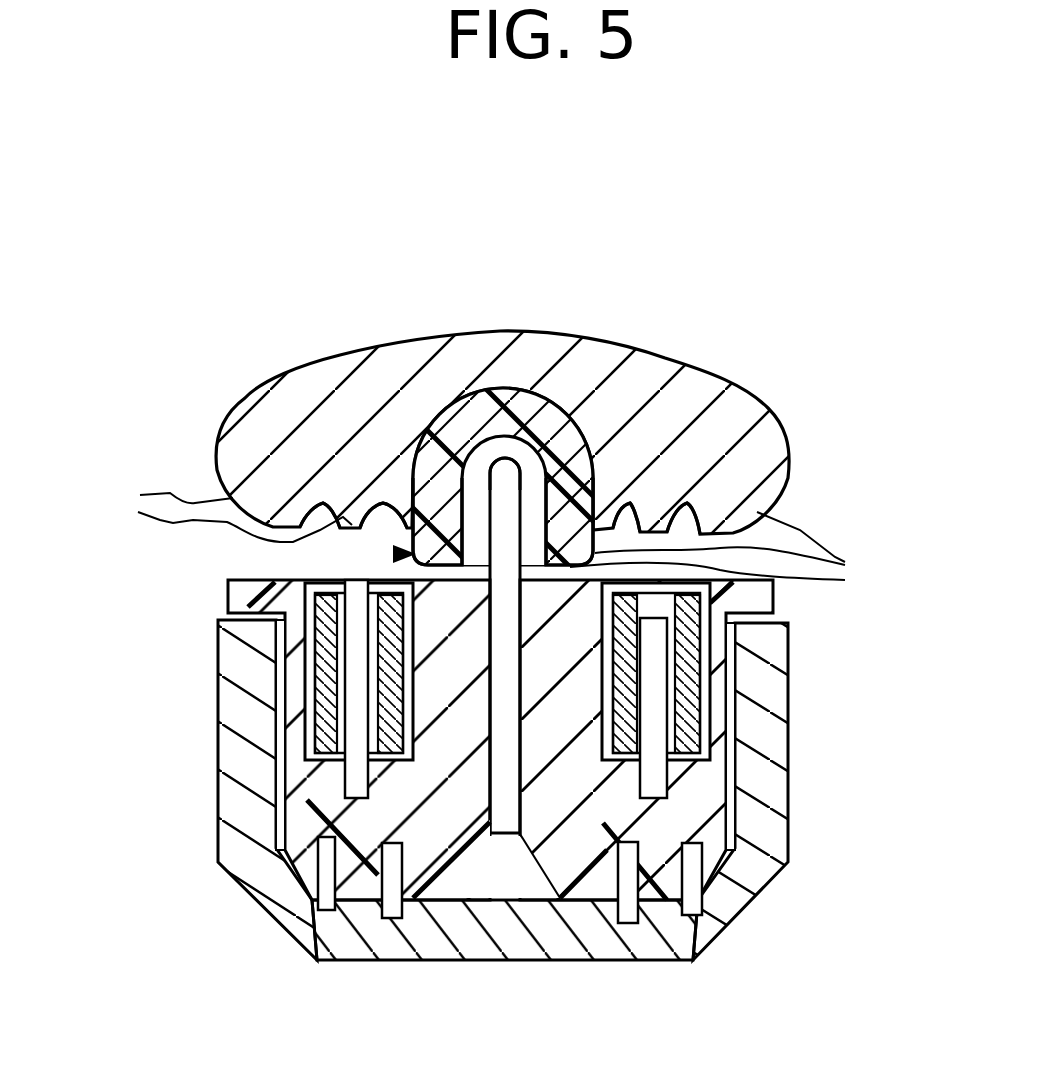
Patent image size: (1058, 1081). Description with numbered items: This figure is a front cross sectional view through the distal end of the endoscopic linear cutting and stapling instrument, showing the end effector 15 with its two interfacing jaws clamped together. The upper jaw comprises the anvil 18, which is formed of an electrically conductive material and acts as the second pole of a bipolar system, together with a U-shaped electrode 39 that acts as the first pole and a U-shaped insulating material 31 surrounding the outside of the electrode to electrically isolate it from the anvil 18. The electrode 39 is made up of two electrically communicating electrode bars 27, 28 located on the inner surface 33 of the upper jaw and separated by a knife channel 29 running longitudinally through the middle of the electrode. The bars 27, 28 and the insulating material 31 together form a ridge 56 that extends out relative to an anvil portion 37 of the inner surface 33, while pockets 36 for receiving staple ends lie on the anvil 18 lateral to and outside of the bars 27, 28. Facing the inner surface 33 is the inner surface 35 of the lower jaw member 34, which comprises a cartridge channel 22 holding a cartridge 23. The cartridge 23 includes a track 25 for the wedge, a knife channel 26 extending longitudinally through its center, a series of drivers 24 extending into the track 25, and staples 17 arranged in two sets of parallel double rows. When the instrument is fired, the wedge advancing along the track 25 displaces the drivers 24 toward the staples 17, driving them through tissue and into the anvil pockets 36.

The end effector 15 is at (160, 318).
The staples 17 is at (388, 703).
The anvil 18 is at (795, 442).
The cartridge channel 22 is at (697, 910).
The cartridge 23 is at (713, 797).
The drivers 24 is at (327, 912).
The track 25 is at (310, 825).
The knife channel 26 is at (507, 836).
The electrode bar 27 is at (618, 505).
The electrode bar 28 is at (450, 450).
The knife channel 29 is at (499, 462).
The U-shaped insulating material 31 is at (520, 432).
The inner surface 33 is at (736, 556).
The jaw member 34 is at (391, 920).
The inner surface 35 is at (360, 580).
The pockets 36 is at (686, 504).
The anvil portion 37 is at (213, 511).
The U-shaped electrode 39 is at (583, 425).
The ridge 56 is at (395, 554).